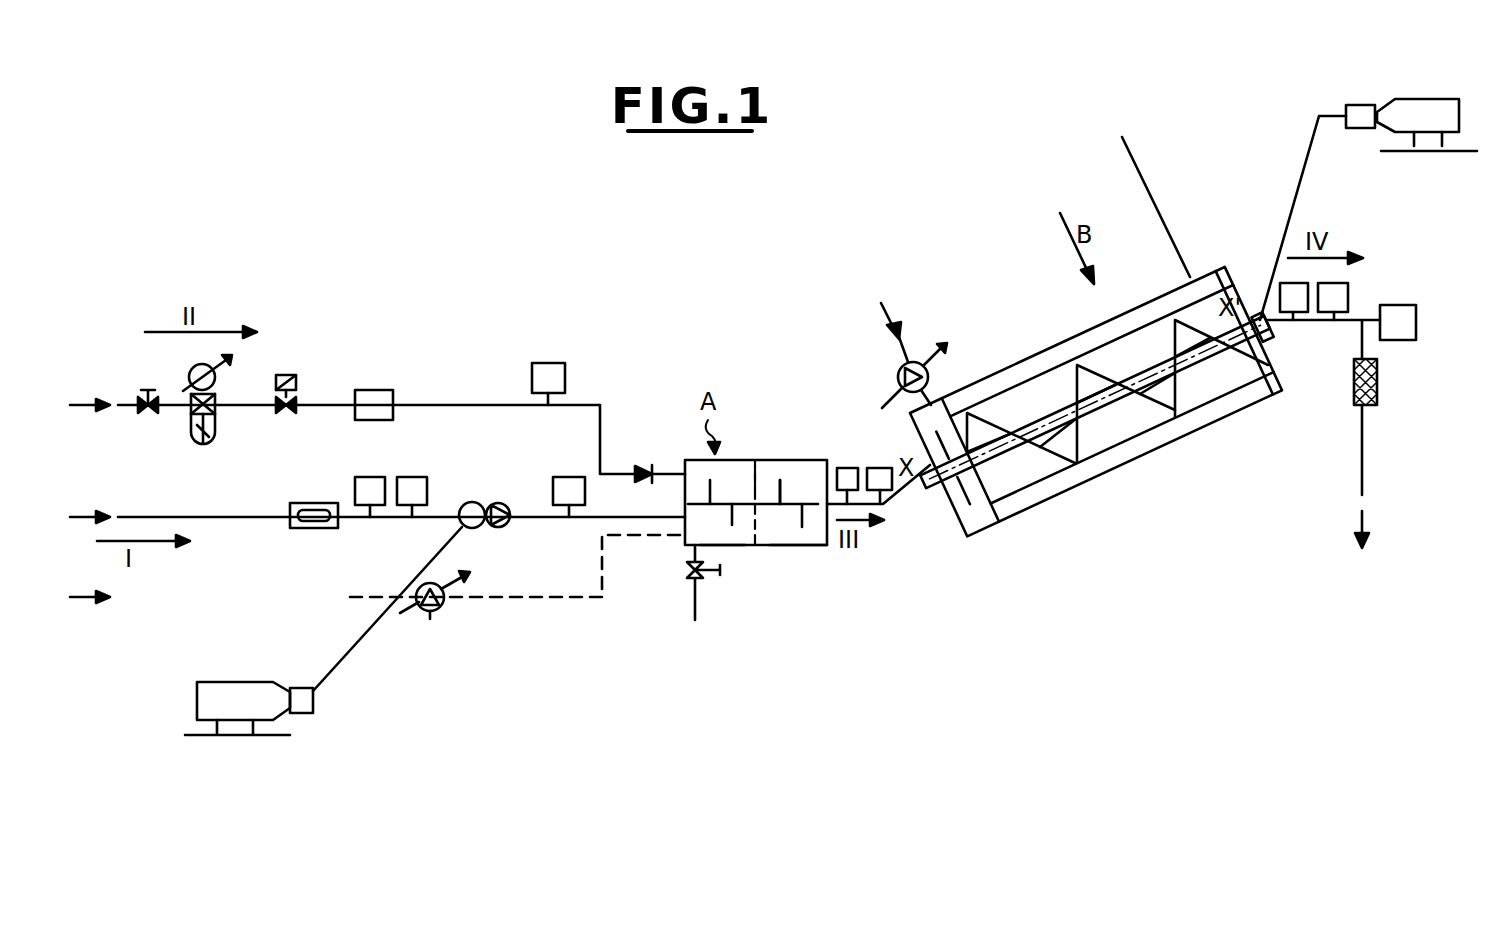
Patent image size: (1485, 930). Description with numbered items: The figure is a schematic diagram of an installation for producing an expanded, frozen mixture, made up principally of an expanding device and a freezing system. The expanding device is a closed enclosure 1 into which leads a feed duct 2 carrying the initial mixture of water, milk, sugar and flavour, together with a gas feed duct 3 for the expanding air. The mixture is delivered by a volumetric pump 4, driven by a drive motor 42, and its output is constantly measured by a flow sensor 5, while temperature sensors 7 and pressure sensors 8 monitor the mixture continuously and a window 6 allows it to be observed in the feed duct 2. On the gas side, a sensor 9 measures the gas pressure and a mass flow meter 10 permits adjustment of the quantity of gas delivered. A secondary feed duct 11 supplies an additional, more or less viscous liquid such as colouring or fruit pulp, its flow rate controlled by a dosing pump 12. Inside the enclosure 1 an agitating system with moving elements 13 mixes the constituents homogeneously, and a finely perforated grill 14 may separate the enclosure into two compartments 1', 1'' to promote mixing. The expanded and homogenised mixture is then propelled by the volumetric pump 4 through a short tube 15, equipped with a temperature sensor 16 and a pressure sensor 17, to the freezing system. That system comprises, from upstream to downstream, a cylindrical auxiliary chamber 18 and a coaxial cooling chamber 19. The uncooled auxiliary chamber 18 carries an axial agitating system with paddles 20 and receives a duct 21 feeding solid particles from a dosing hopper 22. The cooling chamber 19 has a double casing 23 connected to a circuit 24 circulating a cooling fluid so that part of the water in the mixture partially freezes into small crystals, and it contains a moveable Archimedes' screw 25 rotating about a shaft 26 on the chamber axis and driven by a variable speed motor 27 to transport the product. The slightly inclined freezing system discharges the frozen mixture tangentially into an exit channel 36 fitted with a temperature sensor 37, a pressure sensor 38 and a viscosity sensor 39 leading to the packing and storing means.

The closed enclosure 1 is at (775, 517).
The compartment 1' is at (732, 564).
The compartment 1'' is at (818, 564).
The feed duct 2 is at (235, 513).
The gas feed duct 3 is at (487, 402).
The volumetric pump 4 is at (488, 503).
The flow sensor 5 is at (567, 474).
The window 6 is at (322, 528).
The temperature sensor 7 is at (372, 480).
The pressure sensor 8 is at (420, 480).
The sensor 9 is at (558, 380).
The mass flow meter 10 is at (374, 392).
The secondary feed duct 11 is at (533, 600).
The dosing pump 12 is at (435, 607).
The moving elements 13 is at (780, 478).
The finely perforated grill 14 is at (752, 478).
The tube 15 is at (905, 496).
The temperature sensor 16 is at (846, 467).
The pressure sensor 17 is at (883, 467).
The auxiliary chamber 18 is at (1085, 394).
The cooling chamber 19 is at (1096, 404).
The paddles 20 is at (986, 427).
The duct 21 is at (908, 356).
The dosing hopper 22 is at (898, 362).
The double casing 23 is at (1182, 273).
The circuit 24 is at (1147, 197).
The Archimedes' screw 25 is at (1080, 457).
The shaft 26 is at (1244, 332).
The variable speed motor 27 is at (1428, 109).
The exit channel 36 is at (1355, 320).
The temperature sensor 37 is at (1296, 303).
The pressure sensor 38 is at (1336, 305).
The viscosity sensor 39 is at (1403, 337).
The drive motor 42 is at (224, 683).